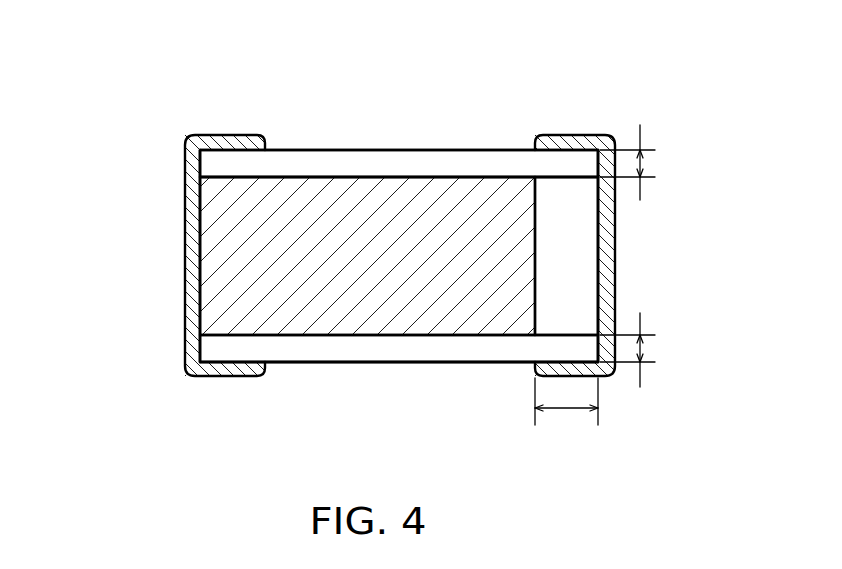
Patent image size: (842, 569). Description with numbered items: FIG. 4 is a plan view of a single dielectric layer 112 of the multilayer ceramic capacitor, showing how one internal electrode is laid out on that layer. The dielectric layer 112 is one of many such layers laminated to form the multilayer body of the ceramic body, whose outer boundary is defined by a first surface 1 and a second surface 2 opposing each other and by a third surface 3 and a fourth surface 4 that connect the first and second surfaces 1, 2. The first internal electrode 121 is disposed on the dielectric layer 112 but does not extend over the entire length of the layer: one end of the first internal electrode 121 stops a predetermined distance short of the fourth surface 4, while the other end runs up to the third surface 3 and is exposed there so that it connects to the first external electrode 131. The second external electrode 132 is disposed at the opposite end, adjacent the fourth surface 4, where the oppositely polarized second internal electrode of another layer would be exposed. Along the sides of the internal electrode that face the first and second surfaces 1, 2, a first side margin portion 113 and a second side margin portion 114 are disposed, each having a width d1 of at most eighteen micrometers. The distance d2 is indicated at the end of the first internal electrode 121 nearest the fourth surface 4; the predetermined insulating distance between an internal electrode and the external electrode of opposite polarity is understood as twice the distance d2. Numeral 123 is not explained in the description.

The first surface 1 is at (418, 123).
The second surface 2 is at (422, 378).
The third surface 3 is at (178, 275).
The fourth surface 4 is at (622, 246).
The dielectric layer 112 is at (586, 286).
The first side margin portion 113 is at (210, 162).
The second side margin portion 114 is at (210, 348).
The first internal electrode 121 is at (373, 295).
The dielectric layer boundary 123 is at (290, 182).
The first external electrode 131 is at (231, 142).
The second external electrode 132 is at (572, 135).
The width of side margin portion d1 is at (641, 256).
The distance d2 is at (566, 410).